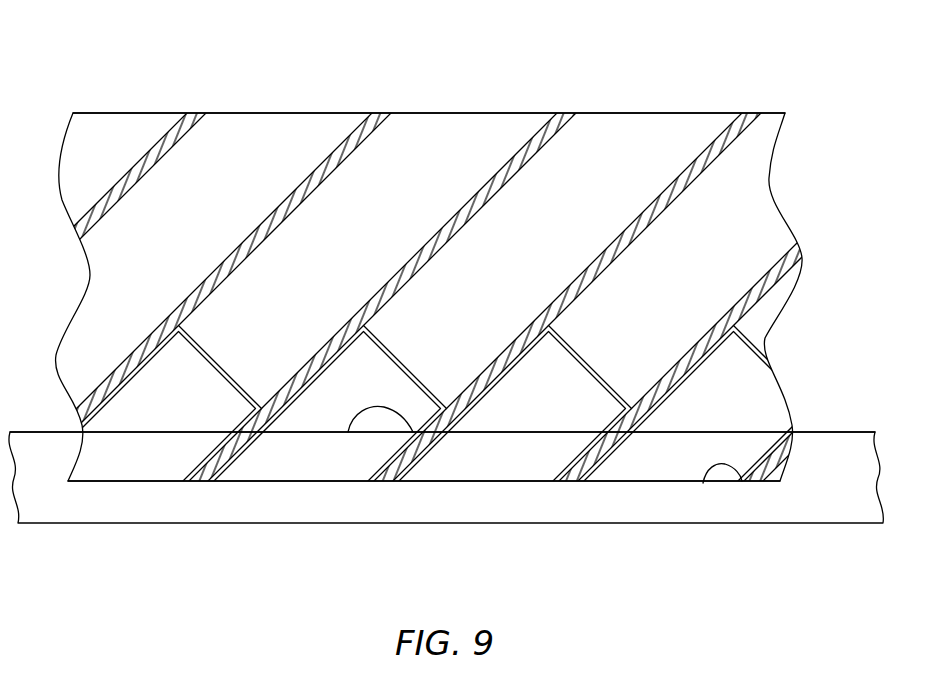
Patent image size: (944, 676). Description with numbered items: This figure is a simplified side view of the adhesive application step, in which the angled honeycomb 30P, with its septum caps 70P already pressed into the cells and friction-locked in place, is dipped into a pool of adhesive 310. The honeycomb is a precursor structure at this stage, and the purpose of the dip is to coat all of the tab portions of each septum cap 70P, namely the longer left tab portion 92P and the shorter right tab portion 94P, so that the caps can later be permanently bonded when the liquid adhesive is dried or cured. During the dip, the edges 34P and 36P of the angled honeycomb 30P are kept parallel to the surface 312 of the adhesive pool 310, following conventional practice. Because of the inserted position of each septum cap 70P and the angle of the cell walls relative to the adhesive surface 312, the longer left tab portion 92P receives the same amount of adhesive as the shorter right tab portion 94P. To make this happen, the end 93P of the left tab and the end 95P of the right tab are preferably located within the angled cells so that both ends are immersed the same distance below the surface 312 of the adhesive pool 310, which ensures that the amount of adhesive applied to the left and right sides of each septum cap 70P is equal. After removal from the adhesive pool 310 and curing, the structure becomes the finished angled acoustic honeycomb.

The angled honeycomb 30P is at (773, 143).
The edge of the angled honeycomb 36P is at (285, 113).
The edge of the angled honeycomb 34P is at (127, 481).
The septum cap 70P is at (221, 363).
The pool of adhesive 310 is at (795, 497).
The surface of the adhesive pool 312 is at (834, 432).
The left tab portion 92P is at (273, 437).
The end of the left tab 93P is at (601, 481).
The right tab portion 94P is at (348, 432).
The end of the right tab 95P is at (703, 483).